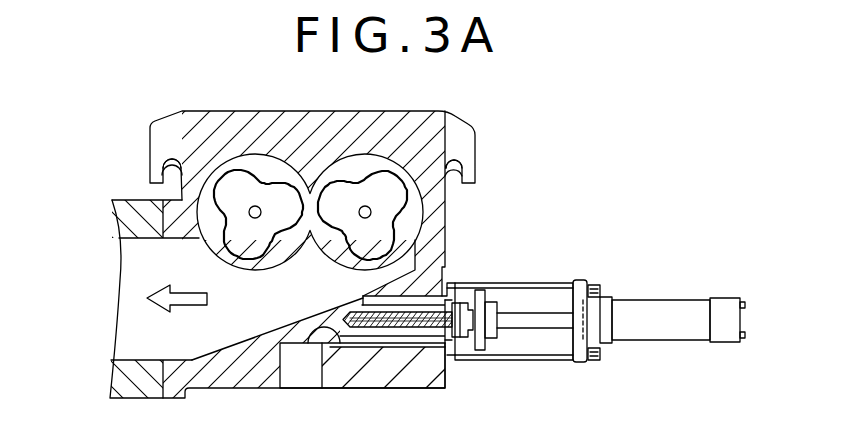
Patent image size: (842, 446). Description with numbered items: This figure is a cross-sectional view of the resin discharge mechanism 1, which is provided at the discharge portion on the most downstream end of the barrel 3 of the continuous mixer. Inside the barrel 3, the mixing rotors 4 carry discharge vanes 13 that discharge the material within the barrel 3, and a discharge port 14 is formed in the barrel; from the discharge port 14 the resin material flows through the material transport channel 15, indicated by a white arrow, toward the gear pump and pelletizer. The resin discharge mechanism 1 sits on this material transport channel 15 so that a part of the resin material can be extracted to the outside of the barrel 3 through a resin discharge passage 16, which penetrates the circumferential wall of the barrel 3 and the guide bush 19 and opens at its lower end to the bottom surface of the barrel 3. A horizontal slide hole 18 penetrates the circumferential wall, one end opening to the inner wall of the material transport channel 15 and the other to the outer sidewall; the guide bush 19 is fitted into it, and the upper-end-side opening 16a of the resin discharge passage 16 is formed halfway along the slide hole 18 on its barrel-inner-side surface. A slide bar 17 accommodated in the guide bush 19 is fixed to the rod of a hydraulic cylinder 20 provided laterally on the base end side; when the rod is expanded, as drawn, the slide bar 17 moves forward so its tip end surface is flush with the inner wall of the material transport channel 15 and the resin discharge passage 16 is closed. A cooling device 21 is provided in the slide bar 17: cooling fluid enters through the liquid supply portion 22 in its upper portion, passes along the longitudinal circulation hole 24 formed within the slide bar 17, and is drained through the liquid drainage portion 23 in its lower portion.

The resin discharge mechanism 1 is at (498, 129).
The barrel 3 is at (318, 132).
The mixing rotors 4 is at (258, 184).
The discharge vanes 13 is at (166, 163).
The discharge port 14 is at (438, 252).
The material transport channel 15 is at (152, 267).
The resin discharge passage 16 is at (300, 372).
The upper-end-side opening 16a is at (350, 348).
The slide bar 17 is at (450, 338).
The slide hole 18 is at (456, 300).
The guide bush 19 is at (404, 330).
The hydraulic cylinder 20 is at (668, 310).
The cooling device 21 is at (332, 318).
The liquid supply portion 22 is at (522, 295).
The liquid drainage portion 23 is at (466, 345).
The circulation hole 24 is at (352, 298).